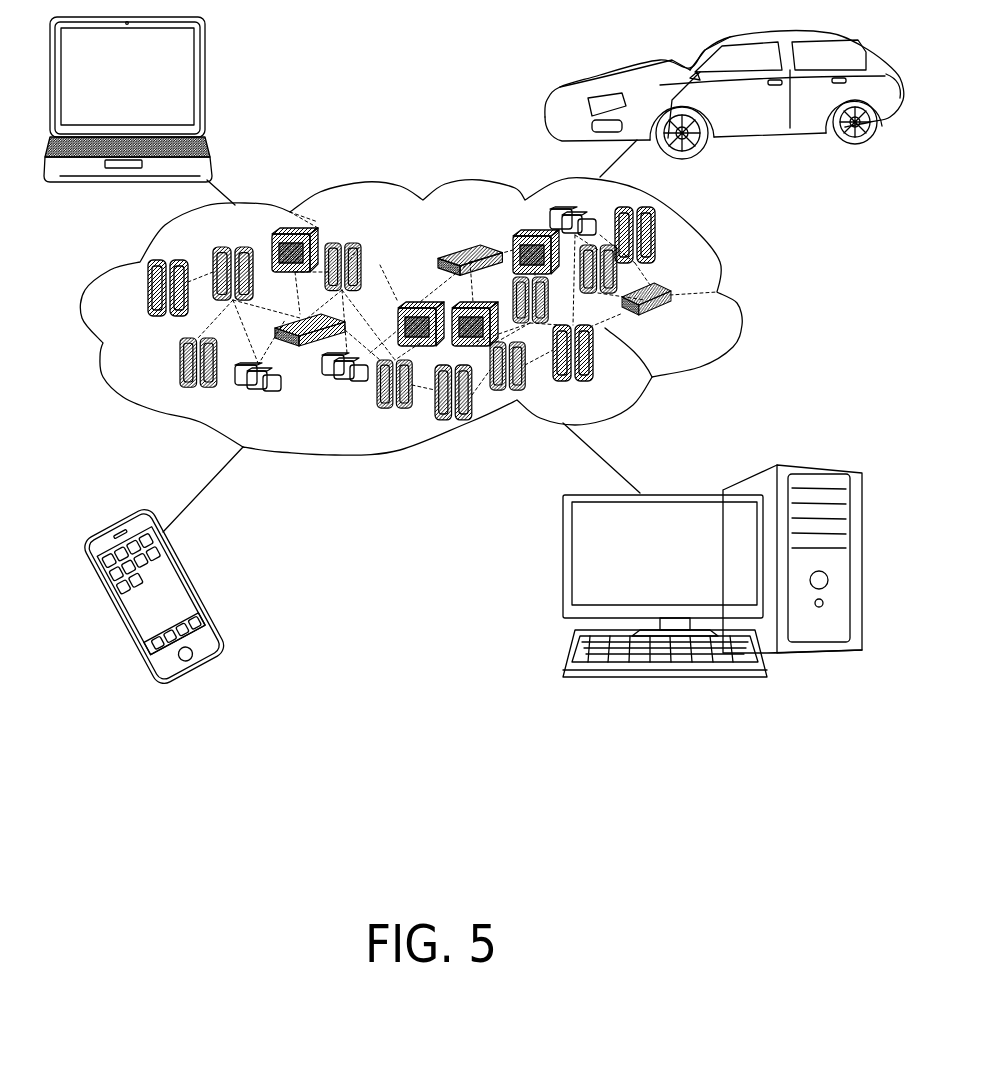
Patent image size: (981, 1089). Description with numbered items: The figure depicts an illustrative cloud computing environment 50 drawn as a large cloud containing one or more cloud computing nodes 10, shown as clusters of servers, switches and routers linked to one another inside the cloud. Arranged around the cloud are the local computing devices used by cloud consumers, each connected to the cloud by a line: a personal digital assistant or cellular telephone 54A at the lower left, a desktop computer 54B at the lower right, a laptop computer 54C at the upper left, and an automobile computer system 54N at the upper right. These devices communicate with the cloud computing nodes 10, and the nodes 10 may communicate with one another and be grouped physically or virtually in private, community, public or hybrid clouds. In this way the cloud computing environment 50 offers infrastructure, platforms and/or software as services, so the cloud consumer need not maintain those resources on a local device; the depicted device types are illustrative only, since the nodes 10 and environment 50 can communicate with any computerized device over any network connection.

The laptop computer 54C is at (183, 93).
The automobile computer system 54N is at (551, 101).
The cloud computing environment 50 is at (437, 316).
The cloud computing node 10 is at (688, 313).
The personal digital assistant or cellular telephone 54A is at (180, 588).
The desktop computer 54B is at (724, 490).